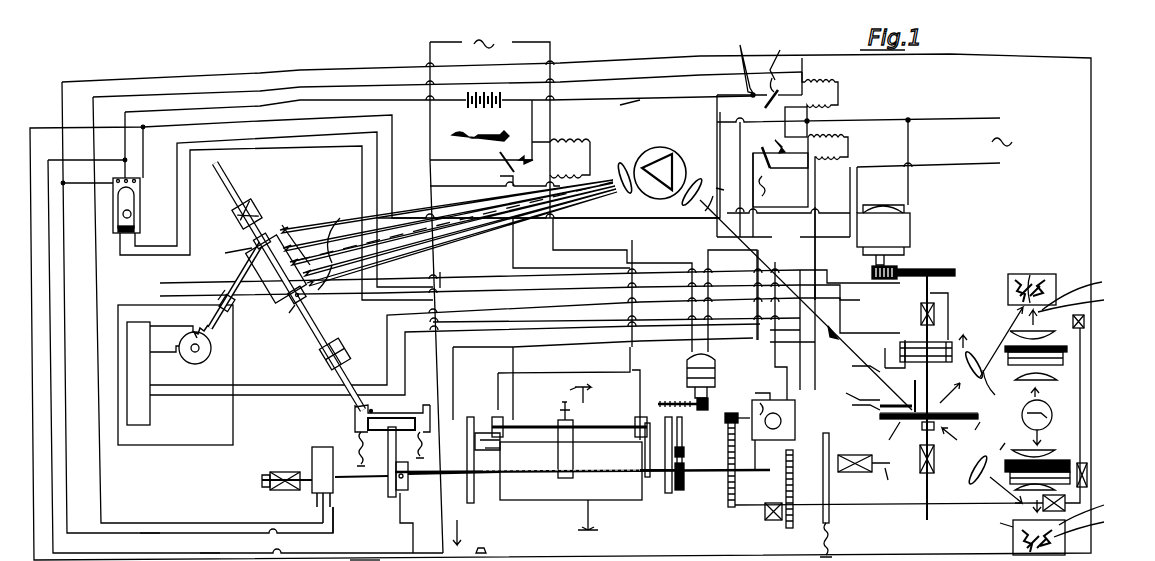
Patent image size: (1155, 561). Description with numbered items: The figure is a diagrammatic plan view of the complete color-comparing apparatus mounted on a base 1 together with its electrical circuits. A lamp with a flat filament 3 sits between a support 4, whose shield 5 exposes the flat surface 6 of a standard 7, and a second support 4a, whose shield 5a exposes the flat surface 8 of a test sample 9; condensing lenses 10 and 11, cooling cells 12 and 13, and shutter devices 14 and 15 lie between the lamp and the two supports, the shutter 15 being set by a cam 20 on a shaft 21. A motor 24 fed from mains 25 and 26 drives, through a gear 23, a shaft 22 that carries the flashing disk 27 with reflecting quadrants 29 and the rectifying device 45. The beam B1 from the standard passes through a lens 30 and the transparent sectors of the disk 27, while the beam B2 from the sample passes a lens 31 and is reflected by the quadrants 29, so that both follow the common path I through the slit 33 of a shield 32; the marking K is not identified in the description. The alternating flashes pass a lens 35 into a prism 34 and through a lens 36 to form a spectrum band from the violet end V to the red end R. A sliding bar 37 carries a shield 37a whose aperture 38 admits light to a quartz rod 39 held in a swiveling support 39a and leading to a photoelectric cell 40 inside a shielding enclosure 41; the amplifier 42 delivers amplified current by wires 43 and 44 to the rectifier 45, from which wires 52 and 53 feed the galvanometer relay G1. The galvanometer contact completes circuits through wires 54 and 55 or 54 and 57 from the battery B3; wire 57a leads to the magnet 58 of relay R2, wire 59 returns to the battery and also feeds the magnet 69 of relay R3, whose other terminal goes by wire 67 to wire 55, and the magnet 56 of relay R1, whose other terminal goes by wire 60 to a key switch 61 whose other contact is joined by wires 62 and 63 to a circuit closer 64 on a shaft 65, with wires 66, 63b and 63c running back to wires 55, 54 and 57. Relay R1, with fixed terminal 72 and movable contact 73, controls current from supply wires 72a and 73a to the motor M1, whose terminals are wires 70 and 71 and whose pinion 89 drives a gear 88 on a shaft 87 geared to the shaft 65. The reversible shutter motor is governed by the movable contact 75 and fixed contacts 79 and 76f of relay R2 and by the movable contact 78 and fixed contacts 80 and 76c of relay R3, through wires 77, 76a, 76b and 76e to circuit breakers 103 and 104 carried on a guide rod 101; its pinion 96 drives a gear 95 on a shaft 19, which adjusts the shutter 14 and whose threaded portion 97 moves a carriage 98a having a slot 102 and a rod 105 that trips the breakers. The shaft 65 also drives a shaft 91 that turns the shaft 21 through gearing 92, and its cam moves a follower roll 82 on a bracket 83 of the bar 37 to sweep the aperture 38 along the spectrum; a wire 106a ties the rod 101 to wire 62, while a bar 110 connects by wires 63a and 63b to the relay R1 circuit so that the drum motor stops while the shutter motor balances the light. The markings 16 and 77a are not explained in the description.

The casing / outer frame 1 is at (1089, 100).
The conductor 57a is at (335, 68).
The conductor 54 is at (112, 145).
The conductor 55 is at (146, 130).
The conductor 57 is at (80, 188).
The galvanometer G1 is at (142, 210).
The supply lead 73a is at (471, 294).
The supply lead 72a is at (527, 126).
The battery B3 is at (439, 106).
The resistance R1 is at (480, 128).
The switch 72 is at (496, 156).
The switch contact 73 is at (495, 177).
The coil 56 is at (575, 135).
The lead 59 is at (622, 110).
The prism 34 is at (658, 147).
The lens 36 is at (457, 207).
The lens 35 is at (700, 180).
The contact 76e is at (707, 209).
The conductor 70 is at (590, 250).
The conductor 71 is at (571, 243).
The conductor 60 is at (440, 266).
The conductor 43 is at (514, 314).
The conductor 44 is at (490, 330).
The conductor 52 is at (466, 281).
The conductor 53 is at (449, 275).
The relay contact 75 is at (762, 102).
The relay armature 76f is at (735, 63).
The contact 79 is at (784, 84).
The resistance R2 is at (781, 56).
The relay coil 58 is at (823, 72).
The supply line 25 is at (940, 120).
The supply line 26 is at (942, 167).
The relay coil 69 is at (844, 129).
The contact / ratchet 80 is at (786, 130).
The conductor 76c is at (735, 179).
The switch arm 78 is at (785, 152).
The resistance R3 is at (780, 180).
The conductor 67 is at (818, 198).
The conductor 76b is at (766, 220).
The motor 24 is at (912, 226).
The worm 23 is at (905, 272).
The worm wheel 22 is at (958, 280).
The coupling 45 is at (916, 332).
The lens 6 is at (935, 340).
The lens 31 is at (993, 343).
The light path 15 is at (996, 382).
The disc 27 is at (885, 420).
The contact 32 is at (880, 407).
The contact arm 33 is at (908, 405).
The conductor 77 is at (859, 404).
The light beam I is at (862, 362).
The disc 29 is at (932, 433).
The beam B2 is at (958, 393).
The beam B1 is at (958, 467).
The lens 30 is at (985, 478).
The light path 14 is at (994, 442).
The coupling 102 is at (835, 490).
The shaft 19 is at (824, 480).
The wheel 91 is at (821, 492).
The coupling 92 is at (1068, 503).
The lamp 4a is at (1058, 275).
The filament 9 is at (1032, 278).
The lamp housing 5a is at (1082, 289).
The lamp socket 8 is at (1079, 302).
The reflector 11 is at (1028, 358).
The filter 20 is at (1070, 347).
The filter 13 is at (1065, 359).
The lens 21 is at (1060, 385).
The shutter R is at (1052, 411).
The direction arrow 3 is at (1052, 417).
The reflector 10 is at (1058, 455).
The filter 12 is at (1060, 470).
The lamp 4 is at (1065, 548).
The lamp housing 5 is at (1000, 520).
The lamp socket 7 is at (1086, 526).
The amplifier housing 41 is at (235, 378).
The amplifier 42 is at (150, 388).
The photocell 40 is at (215, 350).
The rod 39 is at (235, 290).
The pivot 39a is at (217, 281).
The joint 38 is at (232, 252).
The rod 37 is at (326, 330).
The joint 37a is at (279, 316).
The beam K is at (294, 236).
The beam V is at (325, 285).
The bracket 83 is at (378, 398).
The block 82 is at (405, 412).
The spring / housing 65 is at (345, 458).
The plate 61 is at (390, 452).
The contact block 64 is at (333, 496).
The conductor 63 is at (368, 530).
The conductor 63a is at (370, 559).
The conductor 63b is at (210, 540).
The conductor 63c is at (152, 527).
The conductor 62 is at (460, 534).
The plate 106a is at (462, 410).
The conductor 76a is at (562, 372).
The bar 101 is at (520, 418).
The screw 105 is at (591, 397).
The slide 98a is at (575, 460).
The collar / spring 104 is at (502, 440).
The collar 110 is at (502, 453).
The screw shaft 66 is at (683, 455).
The rod 103 is at (655, 450).
The gear 97 is at (668, 495).
The rod 87 is at (684, 437).
The rack 88 is at (670, 400).
The block 89 is at (705, 396).
The solenoid M1 is at (722, 365).
The ratchet 95 is at (728, 498).
The pawl 96 is at (734, 412).
The relay 77a is at (772, 423).
The conductor 16 is at (792, 337).